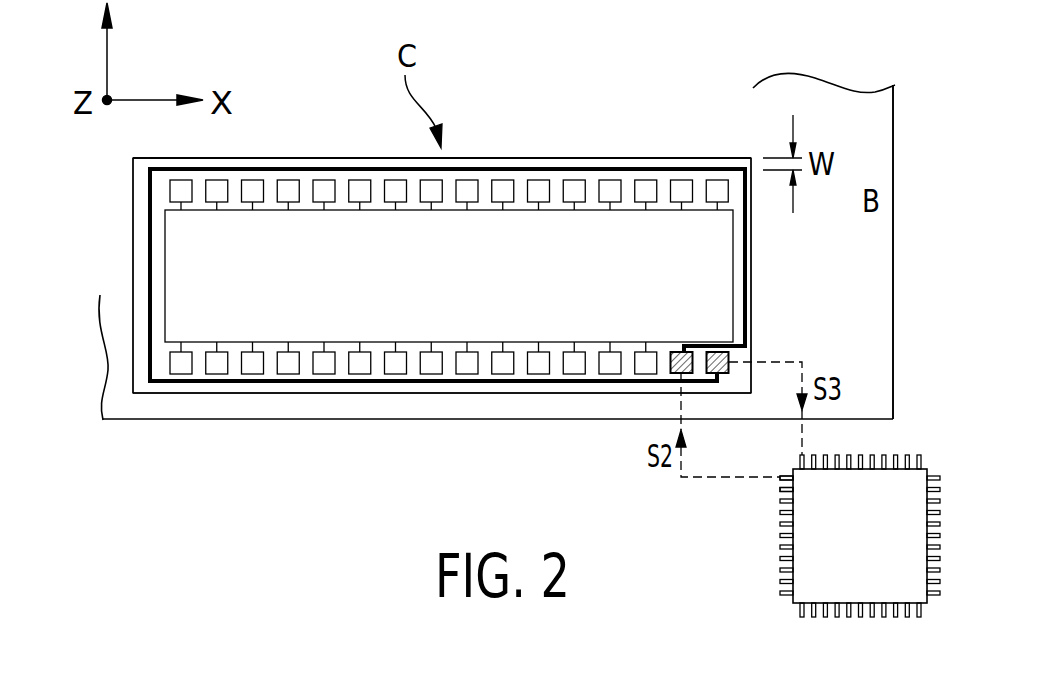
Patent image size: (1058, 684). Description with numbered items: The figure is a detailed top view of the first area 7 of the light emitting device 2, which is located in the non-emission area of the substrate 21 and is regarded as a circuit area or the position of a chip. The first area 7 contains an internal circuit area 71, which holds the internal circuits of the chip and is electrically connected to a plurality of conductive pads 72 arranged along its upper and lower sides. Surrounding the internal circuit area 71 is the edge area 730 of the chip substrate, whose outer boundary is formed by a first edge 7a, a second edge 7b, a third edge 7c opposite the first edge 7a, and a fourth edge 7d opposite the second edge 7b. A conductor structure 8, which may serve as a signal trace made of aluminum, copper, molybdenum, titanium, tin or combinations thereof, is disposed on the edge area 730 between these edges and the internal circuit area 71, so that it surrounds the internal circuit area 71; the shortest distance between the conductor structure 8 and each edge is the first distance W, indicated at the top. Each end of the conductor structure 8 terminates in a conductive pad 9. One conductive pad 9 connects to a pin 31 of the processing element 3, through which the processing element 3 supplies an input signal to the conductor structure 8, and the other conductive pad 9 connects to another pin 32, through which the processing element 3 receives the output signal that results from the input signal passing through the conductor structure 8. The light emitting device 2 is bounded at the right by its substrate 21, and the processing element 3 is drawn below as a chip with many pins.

The light emitting device 2 is at (893, 155).
The substrate 21 is at (855, 300).
The processing element 3 is at (823, 548).
The pin 31 is at (780, 477).
The pin 32 is at (780, 490).
The first area 7 is at (442, 275).
The first edge 7a is at (528, 158).
The second edge 7b is at (142, 262).
The third edge 7c is at (370, 395).
The fourth edge 7d is at (760, 243).
The internal circuit area 71 is at (183, 240).
The conductive pads 72 is at (612, 188).
The edge area 730 is at (312, 165).
The conductor structure 8 is at (673, 168).
The conductive pad 9 is at (729, 358).